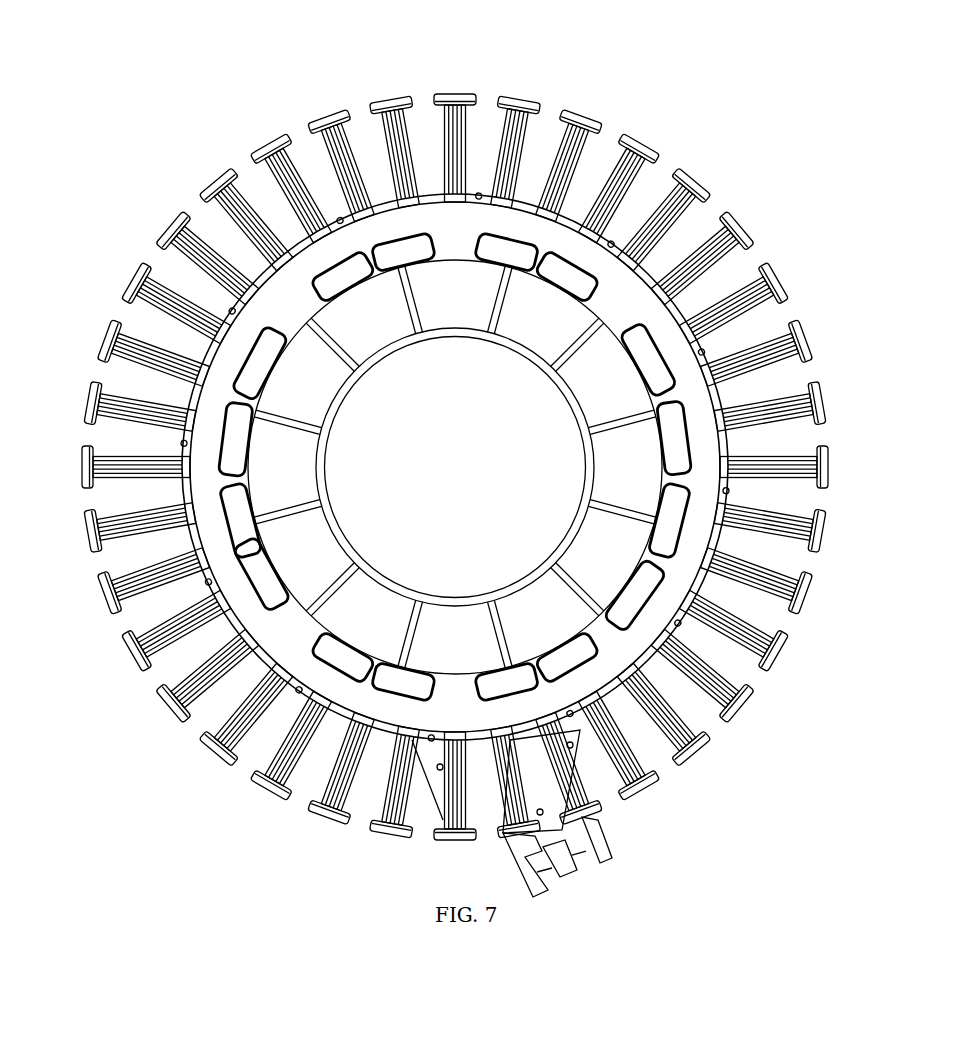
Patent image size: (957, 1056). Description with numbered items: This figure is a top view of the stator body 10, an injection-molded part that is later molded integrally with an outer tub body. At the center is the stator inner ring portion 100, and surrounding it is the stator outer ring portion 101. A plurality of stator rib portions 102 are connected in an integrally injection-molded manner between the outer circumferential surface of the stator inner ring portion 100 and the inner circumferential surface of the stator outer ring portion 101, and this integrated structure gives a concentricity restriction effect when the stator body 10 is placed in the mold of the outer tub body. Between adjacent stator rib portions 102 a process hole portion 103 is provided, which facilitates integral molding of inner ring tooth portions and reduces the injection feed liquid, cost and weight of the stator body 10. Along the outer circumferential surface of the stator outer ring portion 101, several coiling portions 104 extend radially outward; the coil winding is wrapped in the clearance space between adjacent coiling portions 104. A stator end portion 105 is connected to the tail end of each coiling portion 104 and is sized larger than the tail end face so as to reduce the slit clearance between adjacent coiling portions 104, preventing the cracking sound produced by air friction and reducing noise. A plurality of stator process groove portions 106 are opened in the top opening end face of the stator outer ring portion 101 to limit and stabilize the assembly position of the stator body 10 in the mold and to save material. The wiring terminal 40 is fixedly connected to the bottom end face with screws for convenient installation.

The stator body 10 is at (472, 36).
The stator inner ring portion 100 is at (597, 460).
The stator outer ring portion 101 is at (623, 305).
The stator rib portion 102 is at (150, 452).
The process hole portion 103 is at (278, 453).
The coiling portion 104 is at (290, 742).
The stator end portion 105 is at (261, 785).
The stator process groove portion 106 is at (260, 353).
The wiring terminal 40 is at (568, 828).